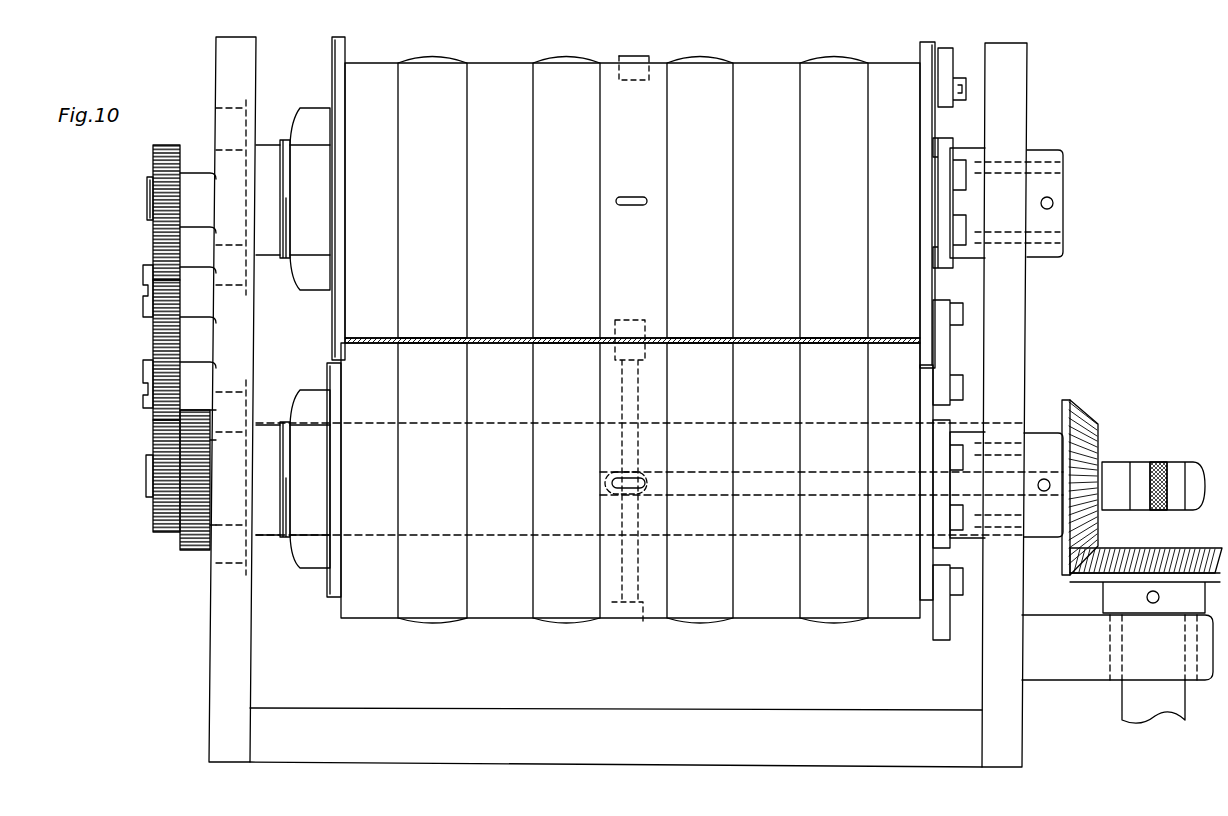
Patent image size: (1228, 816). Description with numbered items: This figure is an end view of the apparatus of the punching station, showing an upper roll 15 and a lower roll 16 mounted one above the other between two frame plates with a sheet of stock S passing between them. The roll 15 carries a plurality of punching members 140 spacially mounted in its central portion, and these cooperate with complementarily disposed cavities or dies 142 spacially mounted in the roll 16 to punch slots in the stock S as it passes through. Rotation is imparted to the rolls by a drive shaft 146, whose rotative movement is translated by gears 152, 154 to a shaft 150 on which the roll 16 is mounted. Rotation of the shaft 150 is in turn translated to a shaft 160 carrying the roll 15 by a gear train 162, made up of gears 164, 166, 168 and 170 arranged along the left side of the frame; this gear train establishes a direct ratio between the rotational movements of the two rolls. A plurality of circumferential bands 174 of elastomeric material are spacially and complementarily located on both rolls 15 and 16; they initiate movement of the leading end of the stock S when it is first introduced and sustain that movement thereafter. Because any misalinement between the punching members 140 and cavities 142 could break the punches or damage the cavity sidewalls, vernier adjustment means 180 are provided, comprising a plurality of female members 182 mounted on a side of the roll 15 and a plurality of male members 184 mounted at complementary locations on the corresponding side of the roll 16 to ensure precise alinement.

The roll 15 is at (777, 63).
The roll 16 is at (777, 622).
The punching members 140 is at (648, 57).
The cavities or dies 142 is at (636, 482).
The drive shaft 146 is at (1183, 700).
The shaft 150 is at (763, 540).
The gear 152 is at (1085, 420).
The gear 154 is at (1143, 549).
The shaft 160 is at (262, 150).
The gear train 162 is at (143, 440).
The gear 164 is at (146, 538).
The gear 166 is at (153, 337).
The gear 168 is at (153, 245).
The gear 170 is at (153, 148).
The circumferential bands 174 is at (432, 53).
The vernier adjustment means 180 is at (977, 349).
The female members 182 is at (953, 68).
The male members 184 is at (950, 625).
The stock S is at (880, 338).